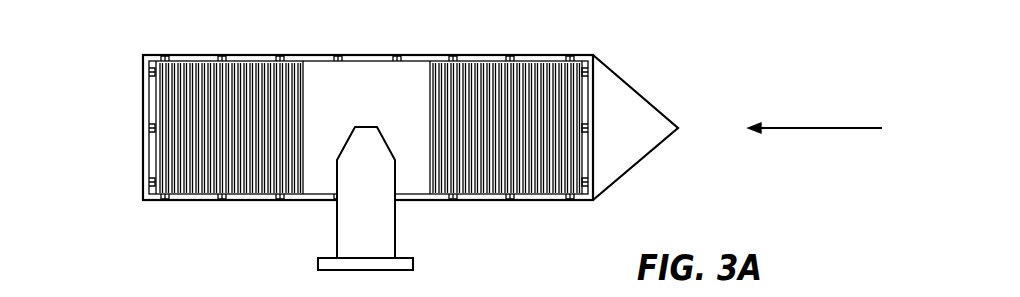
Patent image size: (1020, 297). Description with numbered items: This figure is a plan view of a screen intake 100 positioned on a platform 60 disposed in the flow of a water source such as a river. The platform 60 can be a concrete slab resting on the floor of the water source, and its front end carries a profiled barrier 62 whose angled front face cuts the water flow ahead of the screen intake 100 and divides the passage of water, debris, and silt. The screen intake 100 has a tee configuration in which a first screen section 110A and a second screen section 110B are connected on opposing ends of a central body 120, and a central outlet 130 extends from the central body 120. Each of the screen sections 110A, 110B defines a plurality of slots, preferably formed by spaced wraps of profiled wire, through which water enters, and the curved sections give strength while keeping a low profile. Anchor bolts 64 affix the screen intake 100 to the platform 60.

The screen intake 100 is at (412, 42).
The platform 60 is at (540, 53).
The profiled barrier 62 is at (645, 97).
The anchor bolts 64 is at (163, 58).
The first screen section 110A is at (158, 88).
The second screen section 110B is at (543, 196).
The central body 120 is at (312, 70).
The central outlet 130 is at (337, 232).